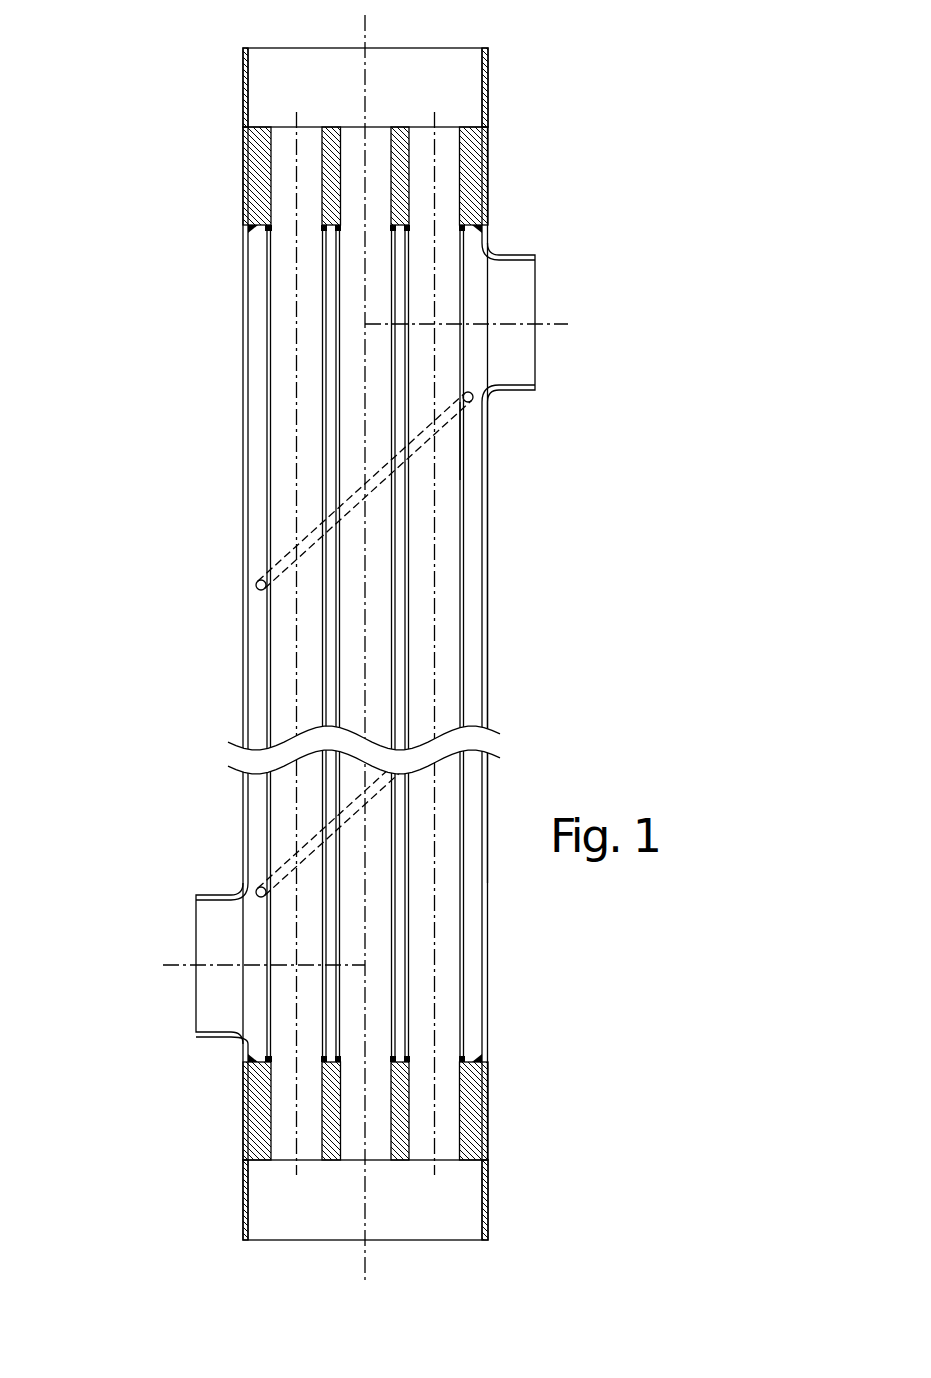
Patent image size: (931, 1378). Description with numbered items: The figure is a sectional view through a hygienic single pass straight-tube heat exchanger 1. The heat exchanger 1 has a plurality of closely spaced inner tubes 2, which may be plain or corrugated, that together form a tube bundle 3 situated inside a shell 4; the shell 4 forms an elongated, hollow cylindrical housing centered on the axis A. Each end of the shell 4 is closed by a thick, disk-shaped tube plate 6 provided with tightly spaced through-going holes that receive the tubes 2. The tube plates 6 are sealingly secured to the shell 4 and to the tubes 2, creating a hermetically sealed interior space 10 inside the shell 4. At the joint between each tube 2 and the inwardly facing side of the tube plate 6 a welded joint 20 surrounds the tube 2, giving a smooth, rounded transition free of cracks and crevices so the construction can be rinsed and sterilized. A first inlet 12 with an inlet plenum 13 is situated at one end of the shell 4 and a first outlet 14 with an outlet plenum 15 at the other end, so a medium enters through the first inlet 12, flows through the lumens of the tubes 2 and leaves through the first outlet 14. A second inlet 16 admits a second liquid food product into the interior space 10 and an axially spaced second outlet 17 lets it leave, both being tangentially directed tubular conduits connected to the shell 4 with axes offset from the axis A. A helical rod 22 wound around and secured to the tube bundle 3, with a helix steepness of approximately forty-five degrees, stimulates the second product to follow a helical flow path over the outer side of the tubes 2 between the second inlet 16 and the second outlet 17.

The heat exchanger 1 is at (134, 144).
The inner tubes 2 is at (292, 453).
The tube bundle 3 is at (478, 438).
The shell 4 is at (488, 520).
The tube plate 6 is at (470, 157).
The interior space 10 is at (255, 713).
The first inlet 12 is at (488, 70).
The inlet plenum 13 is at (426, 87).
The first outlet 14 is at (488, 1210).
The outlet plenum 15 is at (426, 1224).
The second inlet 16 is at (520, 357).
The second outlet 17 is at (213, 1002).
The welded joint 20 is at (243, 232).
The helical rod 22 is at (288, 553).
The axis of the shell A is at (362, 35).